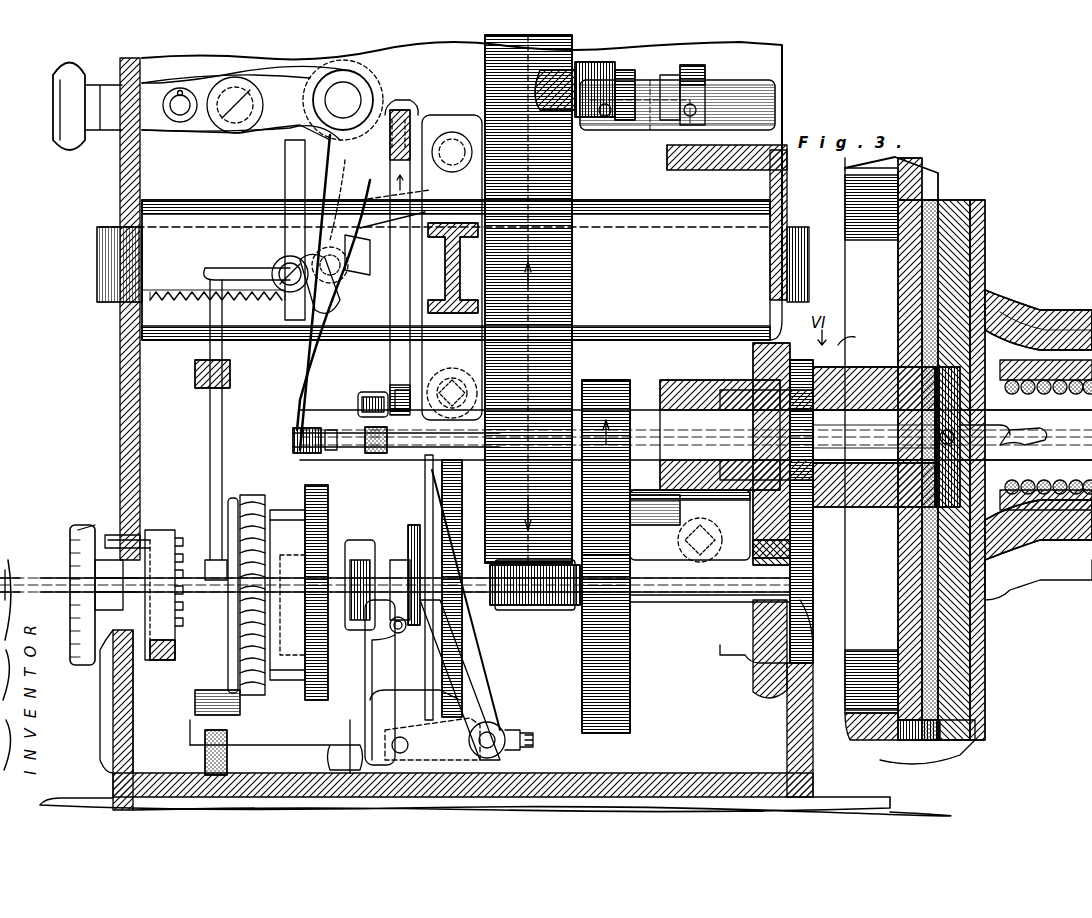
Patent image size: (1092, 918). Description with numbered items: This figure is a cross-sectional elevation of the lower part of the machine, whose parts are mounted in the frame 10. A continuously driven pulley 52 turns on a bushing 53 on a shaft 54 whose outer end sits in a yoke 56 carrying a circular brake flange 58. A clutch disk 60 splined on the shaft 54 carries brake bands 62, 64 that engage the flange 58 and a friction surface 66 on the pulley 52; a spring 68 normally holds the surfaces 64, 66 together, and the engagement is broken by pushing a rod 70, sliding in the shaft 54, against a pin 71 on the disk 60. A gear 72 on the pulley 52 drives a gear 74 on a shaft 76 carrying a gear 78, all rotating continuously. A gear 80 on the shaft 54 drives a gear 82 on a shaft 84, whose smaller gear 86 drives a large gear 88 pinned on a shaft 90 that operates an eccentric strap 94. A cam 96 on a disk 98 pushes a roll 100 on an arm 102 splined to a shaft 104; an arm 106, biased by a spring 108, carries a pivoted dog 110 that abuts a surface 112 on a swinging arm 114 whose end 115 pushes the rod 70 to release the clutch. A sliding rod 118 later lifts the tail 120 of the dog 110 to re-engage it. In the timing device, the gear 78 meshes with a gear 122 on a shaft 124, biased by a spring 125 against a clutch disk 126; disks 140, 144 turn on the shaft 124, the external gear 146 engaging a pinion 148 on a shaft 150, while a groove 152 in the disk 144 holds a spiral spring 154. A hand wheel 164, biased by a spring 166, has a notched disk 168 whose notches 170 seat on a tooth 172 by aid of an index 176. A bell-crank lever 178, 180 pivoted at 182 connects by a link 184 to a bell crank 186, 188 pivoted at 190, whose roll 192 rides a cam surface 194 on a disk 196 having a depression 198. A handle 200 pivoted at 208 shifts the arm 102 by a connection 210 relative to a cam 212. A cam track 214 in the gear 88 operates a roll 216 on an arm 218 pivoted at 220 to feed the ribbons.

The frame 10 is at (773, 678).
The pulley 52 is at (940, 682).
The bushing 53 is at (888, 400).
The shaft 54 is at (697, 395).
The yoke 56 is at (1013, 343).
The brake flange 58 is at (968, 280).
The clutch disk 60 is at (950, 200).
The brake band 62 is at (960, 220).
The brake band 64 is at (937, 277).
The friction surface 66 is at (925, 257).
The spring 68 is at (1007, 497).
The rod 70 is at (725, 440).
The pin 71 is at (1032, 493).
The gear 72 is at (820, 368).
The gear 74 is at (817, 632).
The shaft 76 is at (593, 553).
The gear 78 is at (467, 627).
The gear 80 is at (613, 400).
The gear 82 is at (630, 690).
The shaft 84 is at (817, 545).
The gear 86 is at (605, 550).
The gear 88 is at (572, 173).
The shaft 90 is at (100, 290).
The eccentric strap 94 is at (452, 267).
The cam 96 is at (318, 300).
The disk 98 is at (283, 360).
The roll 100 is at (355, 290).
The arm 102 is at (420, 191).
The shaft 104 is at (345, 100).
The arm 106 is at (290, 175).
The spring 108 is at (185, 303).
The dog 110 is at (333, 295).
The surface 112 is at (412, 212).
The arm 114 is at (395, 150).
The end of arm 115 is at (292, 445).
The rod 118 is at (223, 412).
The tail 120 is at (207, 268).
The gear 122 is at (457, 697).
The shaft 124 is at (395, 580).
The spring 125 is at (537, 612).
The clutch disk 126 is at (440, 512).
The disk 140 is at (298, 700).
The disk 144 is at (290, 682).
The gear 146 is at (320, 500).
The pinion 148 is at (365, 550).
The shaft 150 is at (63, 590).
The groove 152 is at (258, 680).
The spiral spring 154 is at (234, 751).
The hand wheel 164 is at (68, 540).
The spring 166 is at (270, 540).
The notched disk 168 is at (155, 530).
The notches 170 is at (172, 548).
The tooth 172 is at (170, 660).
The index 176 is at (95, 525).
The bell-crank lever arm 178 is at (493, 672).
The bell-crank lever arm 180 is at (470, 712).
The pivot 182 is at (497, 738).
The link 184 is at (375, 690).
The bell crank arm 186 is at (380, 643).
The bell crank arm 188 is at (387, 497).
The pivot 190 is at (360, 655).
The roll 192 is at (360, 405).
The cam surface 194 is at (395, 393).
The disk 196 is at (405, 140).
The depression 198 is at (410, 135).
The handle 200 is at (67, 133).
The pivot 208 is at (182, 100).
The connection 210 is at (275, 95).
The cam 212 is at (318, 245).
The cam track 214 is at (563, 97).
The roll 216 is at (600, 98).
The arm 218 is at (588, 118).
The pivot 220 is at (700, 108).